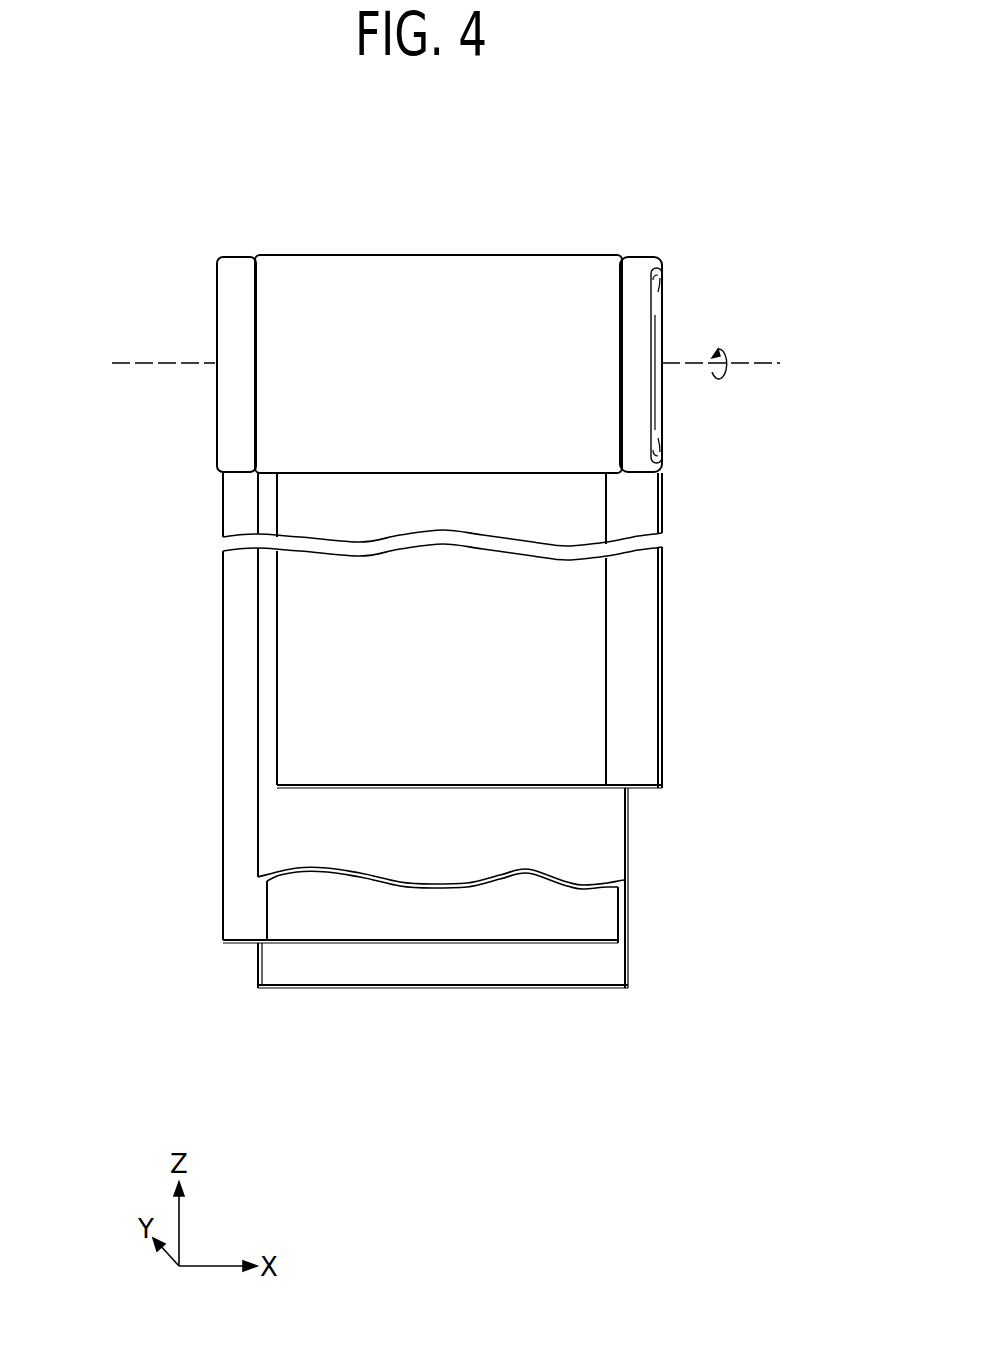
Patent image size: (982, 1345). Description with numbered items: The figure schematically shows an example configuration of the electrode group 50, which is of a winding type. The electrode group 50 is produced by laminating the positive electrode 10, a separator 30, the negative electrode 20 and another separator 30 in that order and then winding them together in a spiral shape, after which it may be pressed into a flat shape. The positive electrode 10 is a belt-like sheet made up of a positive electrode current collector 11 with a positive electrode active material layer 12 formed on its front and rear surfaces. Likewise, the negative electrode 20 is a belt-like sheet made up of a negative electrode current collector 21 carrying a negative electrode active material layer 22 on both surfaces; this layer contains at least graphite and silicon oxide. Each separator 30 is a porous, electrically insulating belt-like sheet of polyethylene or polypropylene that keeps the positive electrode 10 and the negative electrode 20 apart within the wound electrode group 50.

The electrode group 50 is at (197, 207).
The positive electrode 10 is at (520, 630).
The positive electrode current collector 11 is at (645, 662).
The positive electrode active material layer 12 is at (597, 608).
The negative electrode 20 is at (339, 708).
The negative electrode current collector 21 is at (225, 842).
The negative electrode active material layer 22 is at (308, 920).
The separator 30 is at (258, 982).